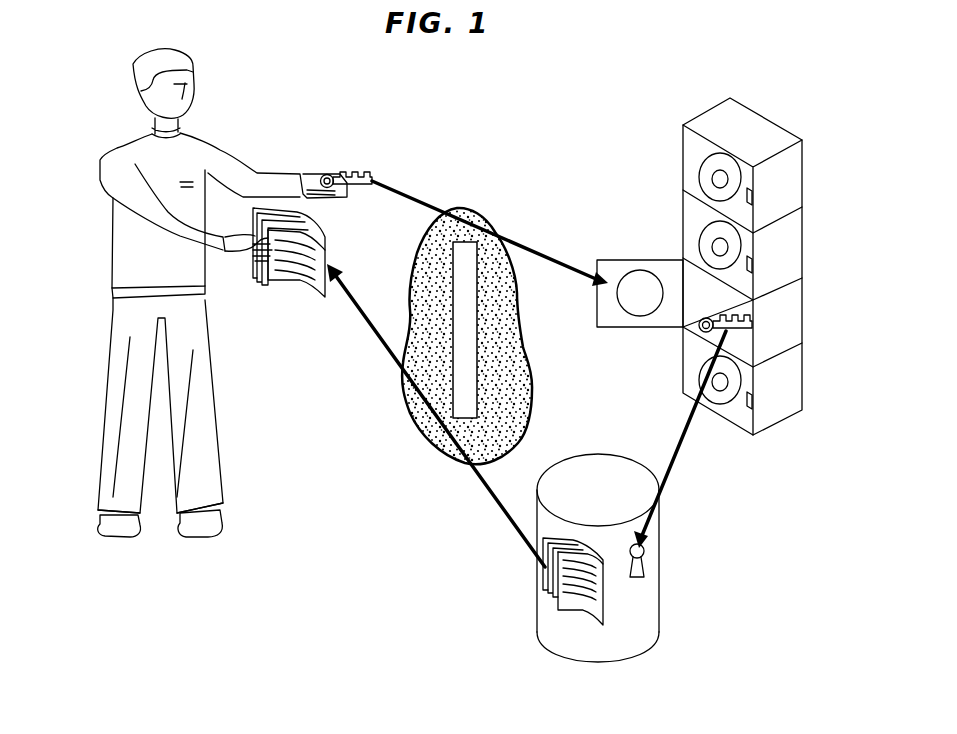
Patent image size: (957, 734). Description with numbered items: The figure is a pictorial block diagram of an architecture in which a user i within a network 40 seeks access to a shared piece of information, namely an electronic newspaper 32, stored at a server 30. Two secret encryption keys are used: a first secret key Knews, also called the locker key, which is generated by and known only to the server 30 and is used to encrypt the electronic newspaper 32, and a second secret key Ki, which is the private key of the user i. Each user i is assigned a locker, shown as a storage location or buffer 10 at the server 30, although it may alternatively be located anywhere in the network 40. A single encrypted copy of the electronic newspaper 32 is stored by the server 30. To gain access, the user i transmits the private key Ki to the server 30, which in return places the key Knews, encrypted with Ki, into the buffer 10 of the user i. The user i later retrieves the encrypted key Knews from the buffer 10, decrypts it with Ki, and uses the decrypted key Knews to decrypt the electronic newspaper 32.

The user i is at (122, 146).
The second secret key Ki is at (373, 174).
The electronic newspaper 32 is at (282, 283).
The network 40 is at (488, 226).
The buffer 10 is at (772, 133).
The first secret key Knews is at (752, 326).
The server 30 is at (660, 552).